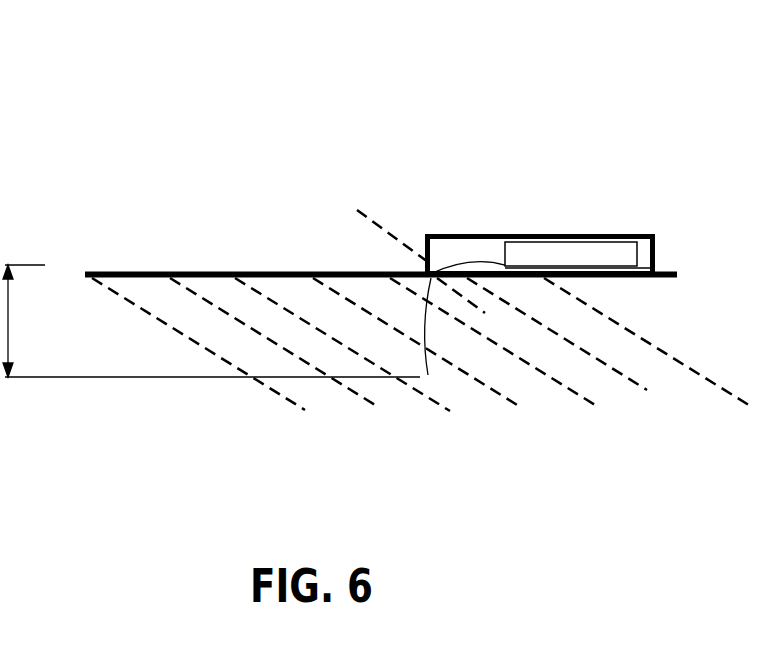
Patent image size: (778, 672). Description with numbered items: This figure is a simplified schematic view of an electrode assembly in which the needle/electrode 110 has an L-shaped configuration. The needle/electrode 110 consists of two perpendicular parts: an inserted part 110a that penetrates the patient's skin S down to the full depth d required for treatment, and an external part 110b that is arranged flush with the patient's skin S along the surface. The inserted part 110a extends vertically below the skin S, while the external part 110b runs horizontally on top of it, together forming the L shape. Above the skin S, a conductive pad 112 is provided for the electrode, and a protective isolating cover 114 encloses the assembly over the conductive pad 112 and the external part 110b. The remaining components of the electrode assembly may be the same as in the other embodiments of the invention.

The patient's skin S is at (182, 265).
The full depth d is at (211, 321).
The needle/electrode 110 is at (472, 317).
The inserted part 110a is at (429, 366).
The external part 110b is at (467, 263).
The conductive pad 112 is at (552, 258).
The protective isolating cover 114 is at (465, 235).